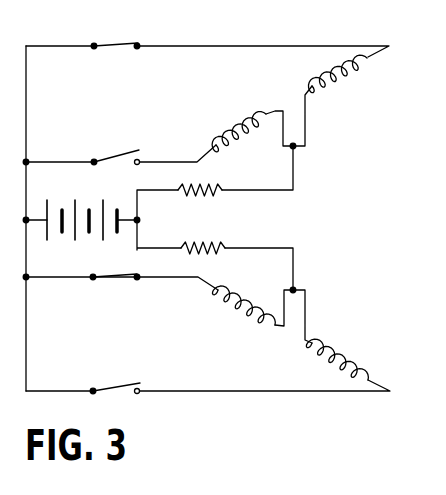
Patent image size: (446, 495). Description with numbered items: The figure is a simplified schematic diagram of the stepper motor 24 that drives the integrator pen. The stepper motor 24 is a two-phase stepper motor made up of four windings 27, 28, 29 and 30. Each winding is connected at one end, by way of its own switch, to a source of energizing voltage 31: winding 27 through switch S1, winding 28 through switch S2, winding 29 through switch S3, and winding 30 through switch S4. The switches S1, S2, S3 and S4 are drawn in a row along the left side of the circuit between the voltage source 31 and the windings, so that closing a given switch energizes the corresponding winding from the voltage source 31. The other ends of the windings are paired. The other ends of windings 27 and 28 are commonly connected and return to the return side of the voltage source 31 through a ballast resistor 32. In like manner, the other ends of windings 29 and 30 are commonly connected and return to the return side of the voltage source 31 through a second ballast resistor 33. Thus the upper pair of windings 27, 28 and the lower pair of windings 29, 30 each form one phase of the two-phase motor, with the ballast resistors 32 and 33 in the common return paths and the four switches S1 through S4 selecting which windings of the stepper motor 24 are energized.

The stepper motor 24 is at (327, 216).
The winding 27 is at (343, 87).
The winding 28 is at (249, 123).
The winding 29 is at (258, 321).
The winding 30 is at (343, 353).
The source of energizing voltage 31 is at (92, 198).
The ballast resistor 32 is at (210, 188).
The ballast resistor 33 is at (215, 254).
The switch S1 is at (115, 32).
The switch S2 is at (115, 149).
The switch S3 is at (115, 266).
The switch S4 is at (115, 378).